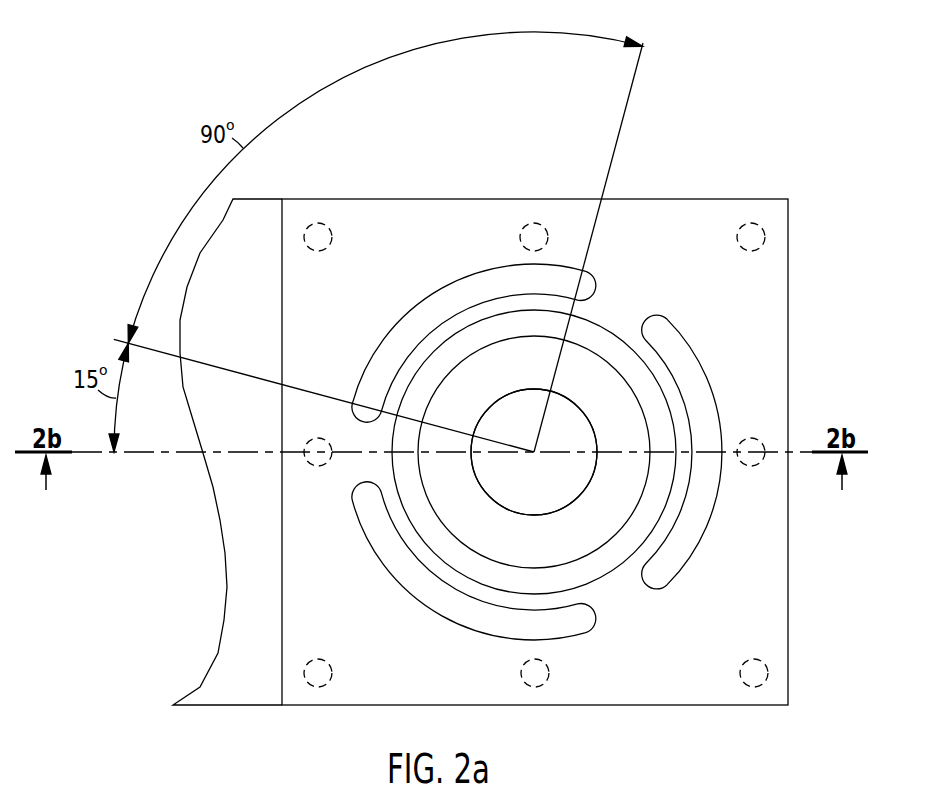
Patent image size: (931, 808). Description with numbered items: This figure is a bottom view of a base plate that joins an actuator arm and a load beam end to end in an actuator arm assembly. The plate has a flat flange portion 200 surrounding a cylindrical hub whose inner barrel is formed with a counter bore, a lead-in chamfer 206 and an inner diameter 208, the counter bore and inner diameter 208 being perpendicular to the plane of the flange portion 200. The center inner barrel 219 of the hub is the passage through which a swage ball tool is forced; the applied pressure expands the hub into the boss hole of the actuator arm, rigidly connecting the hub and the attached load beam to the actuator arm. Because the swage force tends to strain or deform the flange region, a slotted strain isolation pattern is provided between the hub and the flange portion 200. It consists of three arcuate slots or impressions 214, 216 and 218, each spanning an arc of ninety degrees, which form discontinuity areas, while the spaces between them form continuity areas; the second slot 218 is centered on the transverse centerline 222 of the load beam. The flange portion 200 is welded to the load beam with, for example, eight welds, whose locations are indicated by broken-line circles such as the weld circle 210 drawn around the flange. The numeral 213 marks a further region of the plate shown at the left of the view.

The flange portion 200 is at (340, 312).
The lead-in chamfer 206 is at (628, 427).
The inner diameter 208 is at (498, 503).
The mounting hole 210 is at (312, 465).
The flange portion 213 is at (253, 312).
The arcuate slot 214 is at (382, 563).
The arcuate slot 216 is at (448, 285).
The second slot 218 is at (692, 352).
The center inner barrel 219 is at (557, 497).
The transverse centerline 222 is at (447, 455).